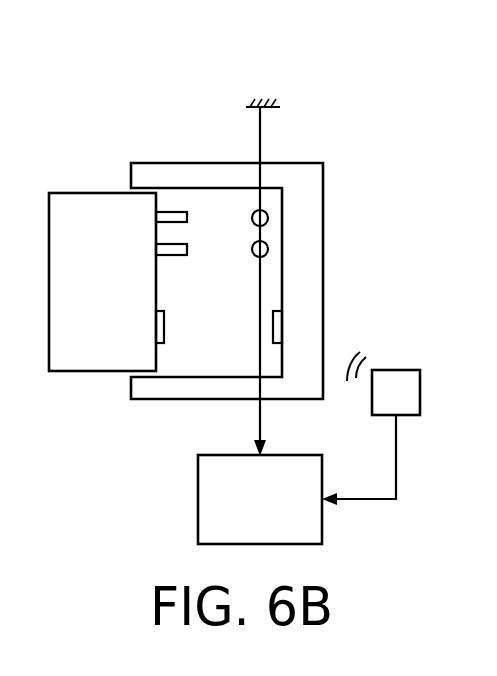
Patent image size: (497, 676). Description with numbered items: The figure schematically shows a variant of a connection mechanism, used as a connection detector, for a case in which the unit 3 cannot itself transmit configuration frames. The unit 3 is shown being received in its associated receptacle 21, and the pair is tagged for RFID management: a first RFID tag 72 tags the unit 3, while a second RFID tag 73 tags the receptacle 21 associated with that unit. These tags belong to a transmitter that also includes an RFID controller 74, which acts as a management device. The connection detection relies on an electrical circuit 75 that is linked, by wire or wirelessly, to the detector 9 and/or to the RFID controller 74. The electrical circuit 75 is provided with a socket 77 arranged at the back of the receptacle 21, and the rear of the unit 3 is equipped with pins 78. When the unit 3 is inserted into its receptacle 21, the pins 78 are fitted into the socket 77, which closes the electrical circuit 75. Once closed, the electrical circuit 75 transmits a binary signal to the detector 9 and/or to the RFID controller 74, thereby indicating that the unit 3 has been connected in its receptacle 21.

The unit 3 is at (101, 188).
The detector 9 is at (198, 472).
The receptacle 21 is at (226, 162).
The first RFID tag 72 is at (160, 318).
The second RFID tag 73 is at (279, 315).
The RFID controller 74 is at (390, 369).
The electrical circuit 75 is at (266, 292).
The socket 77 is at (273, 232).
The pins 78 is at (181, 206).